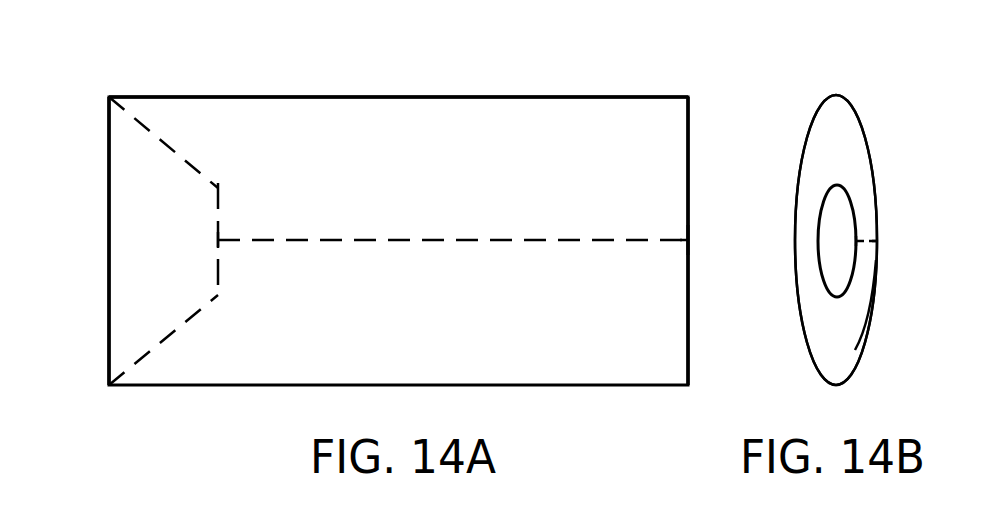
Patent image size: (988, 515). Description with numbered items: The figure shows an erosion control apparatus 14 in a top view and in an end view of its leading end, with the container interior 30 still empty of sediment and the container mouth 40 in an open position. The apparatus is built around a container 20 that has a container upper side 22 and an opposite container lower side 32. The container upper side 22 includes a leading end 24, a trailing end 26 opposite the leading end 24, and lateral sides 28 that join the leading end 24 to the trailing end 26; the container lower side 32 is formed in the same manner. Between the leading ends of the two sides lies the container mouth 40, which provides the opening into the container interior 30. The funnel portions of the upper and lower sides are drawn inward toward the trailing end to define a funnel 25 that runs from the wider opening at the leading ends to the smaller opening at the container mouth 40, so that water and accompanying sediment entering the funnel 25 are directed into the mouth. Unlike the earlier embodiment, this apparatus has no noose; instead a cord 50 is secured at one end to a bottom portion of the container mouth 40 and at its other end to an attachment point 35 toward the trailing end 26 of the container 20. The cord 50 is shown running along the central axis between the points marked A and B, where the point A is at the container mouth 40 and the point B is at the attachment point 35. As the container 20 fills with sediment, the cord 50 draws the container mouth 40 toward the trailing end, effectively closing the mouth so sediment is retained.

In FIG. 14A, the erosion control apparatus 14 is at (91, 66).
In FIG. 14A, the container 20 is at (636, 88).
In FIG. 14B, the container 20 is at (872, 88).
In FIG. 14B, the container upper side 22 is at (812, 120).
In FIG. 14A, the leading end 24 is at (109, 222).
In FIG. 14A, the funnel 25 is at (172, 250).
In FIG. 14A, the trailing end 26 is at (690, 333).
In FIG. 14A, the lateral sides 28 is at (378, 97).
In FIG. 14A, the container interior 30 is at (399, 218).
In FIG. 14B, the container lower side 32 is at (868, 328).
In FIG. 14A, the attachment point 35 is at (692, 240).
In FIG. 14A, the container mouth 40 is at (218, 188).
In FIG. 14B, the container mouth 40 is at (822, 204).
In FIG. 14A, the cord 50 is at (471, 240).
In FIG. 14B, the cord 50 is at (861, 247).
In FIG. 14A, the point A is at (219, 240).
In FIG. 14B, the point A is at (856, 242).
In FIG. 14A, the point B is at (688, 240).
In FIG. 14B, the point B is at (878, 241).